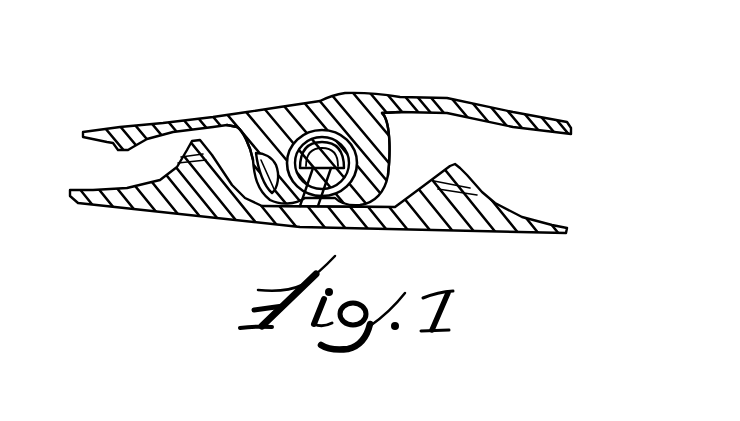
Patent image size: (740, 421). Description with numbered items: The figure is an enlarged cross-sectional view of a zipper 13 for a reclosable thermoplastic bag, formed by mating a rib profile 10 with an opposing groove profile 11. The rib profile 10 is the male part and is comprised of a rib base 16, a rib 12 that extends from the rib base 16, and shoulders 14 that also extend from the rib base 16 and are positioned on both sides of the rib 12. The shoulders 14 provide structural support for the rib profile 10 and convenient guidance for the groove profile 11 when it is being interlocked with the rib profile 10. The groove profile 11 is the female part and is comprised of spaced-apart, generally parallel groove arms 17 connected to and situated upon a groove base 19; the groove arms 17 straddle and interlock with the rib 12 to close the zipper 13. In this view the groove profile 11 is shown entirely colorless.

The second fastener strip 10 is at (513, 233).
The first fastener strip 11 is at (421, 99).
The groove 12 is at (318, 192).
The closure fastener 13 is at (592, 139).
The ribs 14 is at (478, 208).
The male profile rib 16 is at (335, 210).
The shoulders 17 is at (263, 142).
The hook profile 19 is at (340, 110).